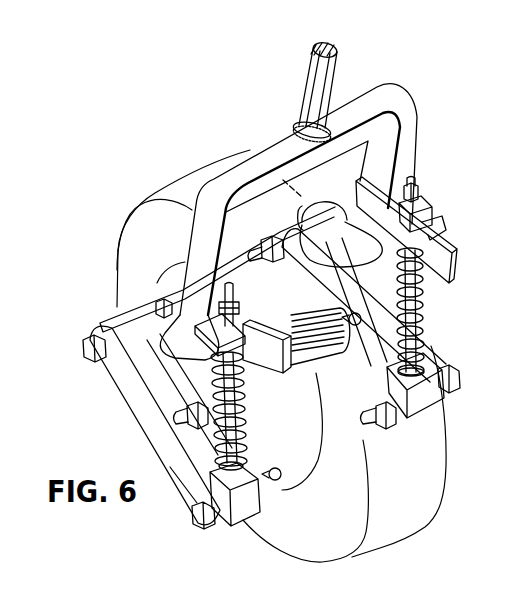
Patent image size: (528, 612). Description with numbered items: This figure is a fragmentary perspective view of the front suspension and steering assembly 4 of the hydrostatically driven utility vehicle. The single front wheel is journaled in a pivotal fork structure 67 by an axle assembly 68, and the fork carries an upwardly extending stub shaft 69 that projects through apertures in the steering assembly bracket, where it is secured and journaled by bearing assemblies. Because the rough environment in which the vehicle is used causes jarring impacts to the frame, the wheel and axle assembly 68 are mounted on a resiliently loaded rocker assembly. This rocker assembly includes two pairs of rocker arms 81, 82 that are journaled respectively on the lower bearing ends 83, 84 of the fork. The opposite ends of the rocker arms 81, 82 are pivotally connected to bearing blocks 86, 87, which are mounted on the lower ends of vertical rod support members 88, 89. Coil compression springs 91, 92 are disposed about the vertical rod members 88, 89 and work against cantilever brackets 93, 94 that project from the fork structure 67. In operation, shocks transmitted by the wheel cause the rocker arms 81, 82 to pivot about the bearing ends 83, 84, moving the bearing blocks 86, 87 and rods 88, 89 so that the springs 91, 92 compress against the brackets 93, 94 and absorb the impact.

The front suspension and steering assembly 4 is at (446, 173).
The pivotal fork structure 67 is at (411, 127).
The axle assembly 68 is at (313, 372).
The stub shaft 69 is at (329, 82).
The rocker arms 81 is at (138, 418).
The rocker arms 82 is at (446, 356).
The lower bearing end 83 is at (128, 320).
The lower bearing end 84 is at (302, 202).
The bearing block 86 is at (247, 505).
The bearing block 87 is at (422, 403).
The vertical rod support member 88 is at (208, 320).
The vertical rod support member 89 is at (419, 193).
The coil compression spring 91 is at (245, 417).
The coil compression spring 92 is at (423, 307).
The cantilever bracket 93 is at (266, 323).
The cantilever bracket 94 is at (437, 232).